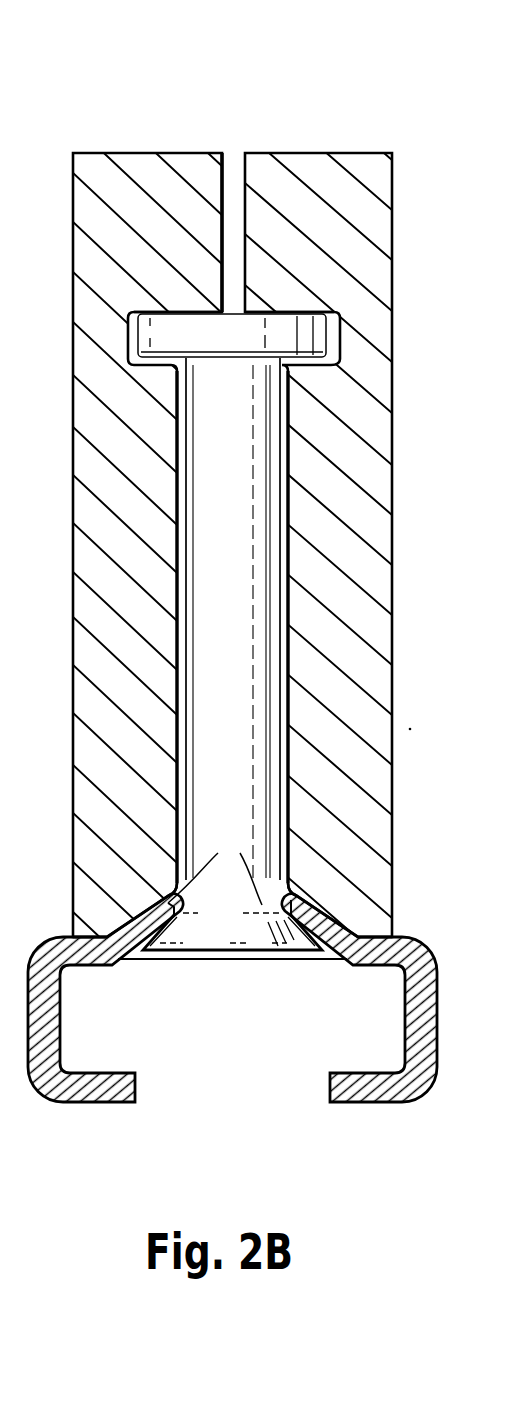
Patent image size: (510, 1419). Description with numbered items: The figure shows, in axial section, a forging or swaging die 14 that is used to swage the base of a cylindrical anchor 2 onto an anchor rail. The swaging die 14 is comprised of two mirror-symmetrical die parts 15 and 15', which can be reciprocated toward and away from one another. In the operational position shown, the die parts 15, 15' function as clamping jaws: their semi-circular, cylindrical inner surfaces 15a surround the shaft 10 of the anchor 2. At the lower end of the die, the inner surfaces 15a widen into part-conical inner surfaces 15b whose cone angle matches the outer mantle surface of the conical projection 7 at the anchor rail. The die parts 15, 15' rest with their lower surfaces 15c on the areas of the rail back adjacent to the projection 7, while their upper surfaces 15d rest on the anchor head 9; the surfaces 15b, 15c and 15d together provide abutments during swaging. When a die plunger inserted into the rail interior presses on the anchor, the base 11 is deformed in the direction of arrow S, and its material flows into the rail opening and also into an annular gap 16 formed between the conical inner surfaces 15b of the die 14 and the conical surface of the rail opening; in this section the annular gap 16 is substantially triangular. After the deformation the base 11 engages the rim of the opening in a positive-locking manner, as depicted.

The anchor 2 is at (178, 582).
The conical projection 7 is at (147, 930).
The nut 9 is at (160, 332).
The shaft 10 is at (247, 708).
The base 11 is at (265, 940).
The swaging die 14 is at (230, 124).
The die part 15 is at (158, 549).
The die part 15' is at (307, 484).
The inner surfaces 15a is at (288, 537).
The conical inner surfaces 15b is at (232, 858).
The lower surfaces 15c is at (108, 937).
The upper surfaces 15d is at (146, 303).
The annular gap 16 is at (290, 901).
The arrow S is at (236, 992).